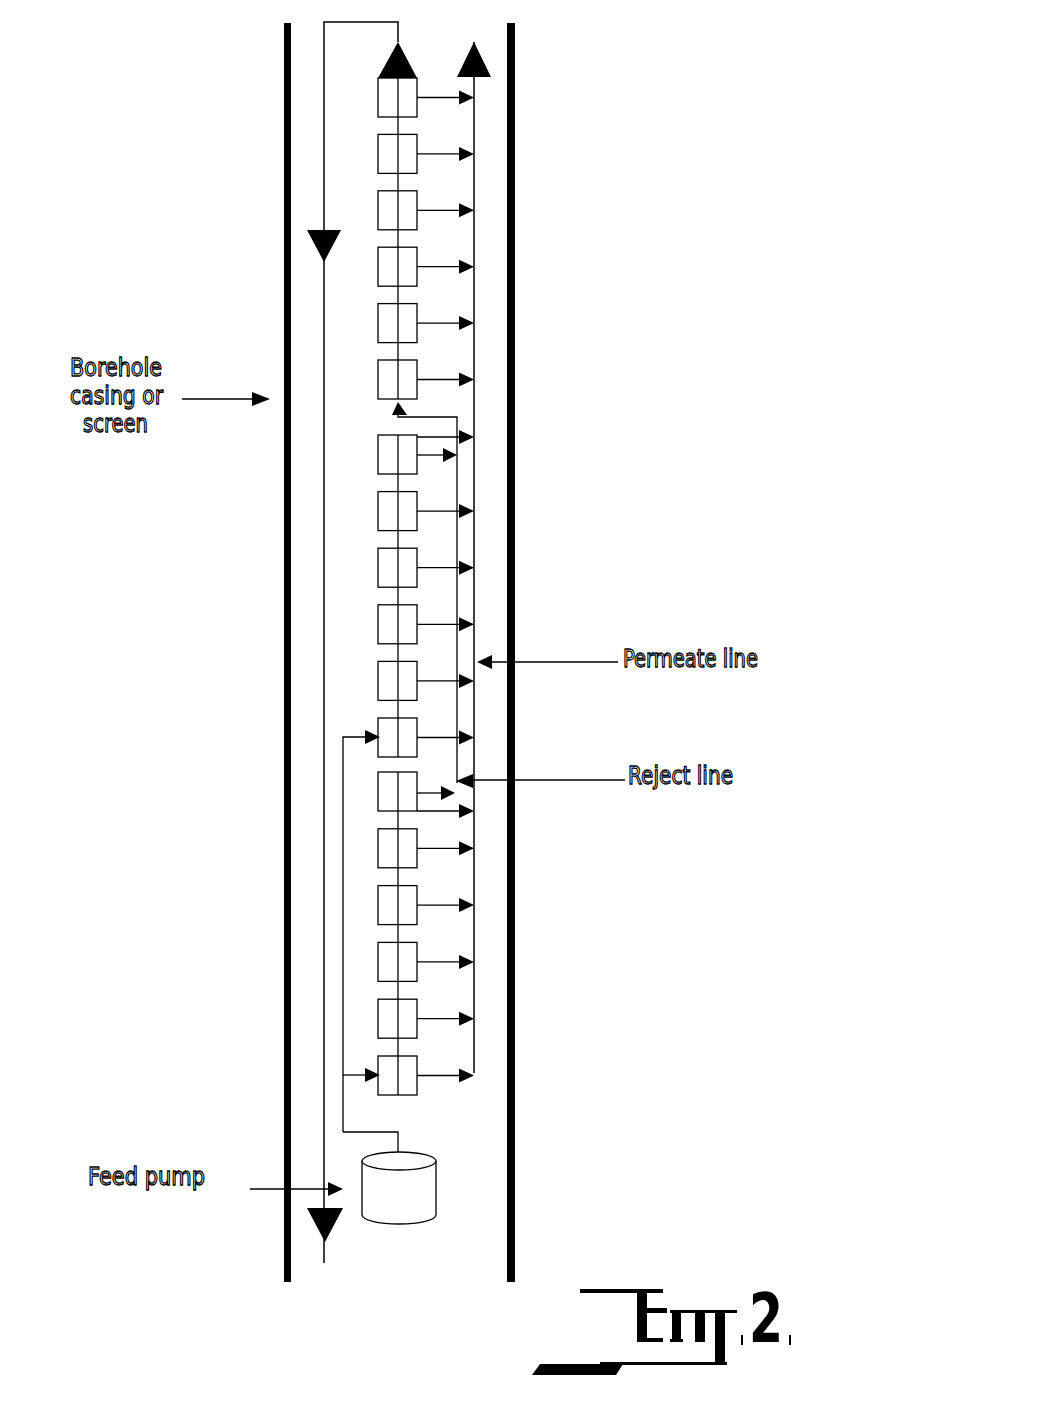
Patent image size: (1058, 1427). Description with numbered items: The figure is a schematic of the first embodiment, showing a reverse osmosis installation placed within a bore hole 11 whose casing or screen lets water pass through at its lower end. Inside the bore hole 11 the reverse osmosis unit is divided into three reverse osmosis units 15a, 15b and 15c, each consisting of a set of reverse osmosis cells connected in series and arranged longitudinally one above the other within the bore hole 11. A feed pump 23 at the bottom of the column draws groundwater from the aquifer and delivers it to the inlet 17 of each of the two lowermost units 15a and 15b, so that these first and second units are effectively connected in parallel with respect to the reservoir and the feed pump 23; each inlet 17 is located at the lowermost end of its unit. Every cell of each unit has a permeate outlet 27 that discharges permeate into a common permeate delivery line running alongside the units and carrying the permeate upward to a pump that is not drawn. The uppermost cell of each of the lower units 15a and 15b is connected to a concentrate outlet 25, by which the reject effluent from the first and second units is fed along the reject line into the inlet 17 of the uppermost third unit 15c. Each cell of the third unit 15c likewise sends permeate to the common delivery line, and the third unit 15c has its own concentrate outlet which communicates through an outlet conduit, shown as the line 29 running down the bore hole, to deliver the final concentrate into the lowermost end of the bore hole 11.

The bore hole 11 is at (515, 483).
The first reverse osmosis unit 15a is at (428, 771).
The second reverse osmosis unit 15b is at (433, 425).
The third reverse osmosis unit 15c is at (427, 401).
The inlet 17 is at (392, 401).
The feed pump 23 is at (418, 1188).
The concentrate outlet 25 is at (455, 450).
The permeate outlet 27 is at (434, 98).
The feed line 29 is at (323, 547).